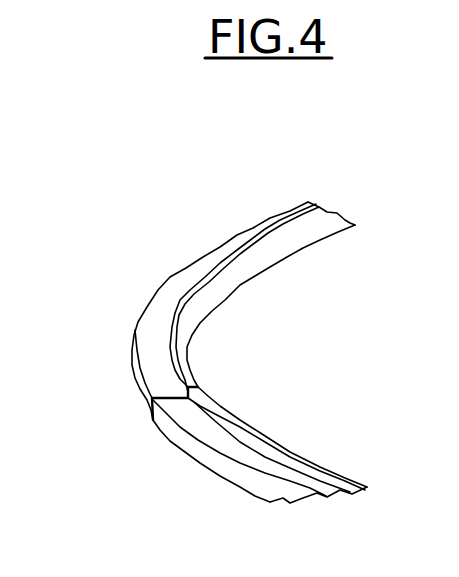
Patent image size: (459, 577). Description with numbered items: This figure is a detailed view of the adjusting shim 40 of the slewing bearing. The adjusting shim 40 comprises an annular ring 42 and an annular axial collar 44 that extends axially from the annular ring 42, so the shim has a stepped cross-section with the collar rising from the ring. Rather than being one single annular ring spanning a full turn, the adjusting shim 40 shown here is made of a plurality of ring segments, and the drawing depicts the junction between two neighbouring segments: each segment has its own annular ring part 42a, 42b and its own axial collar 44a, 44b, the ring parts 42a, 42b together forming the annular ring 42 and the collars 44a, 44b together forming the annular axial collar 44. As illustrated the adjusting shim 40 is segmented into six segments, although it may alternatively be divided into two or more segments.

The adjusting shim 40 is at (177, 182).
The annular ring 42 is at (171, 277).
The annular ring part 42a is at (143, 333).
The annular ring part 42b is at (185, 453).
The annular axial collar 44 is at (266, 224).
The axial collar 44a is at (212, 270).
The axial collar 44b is at (305, 470).